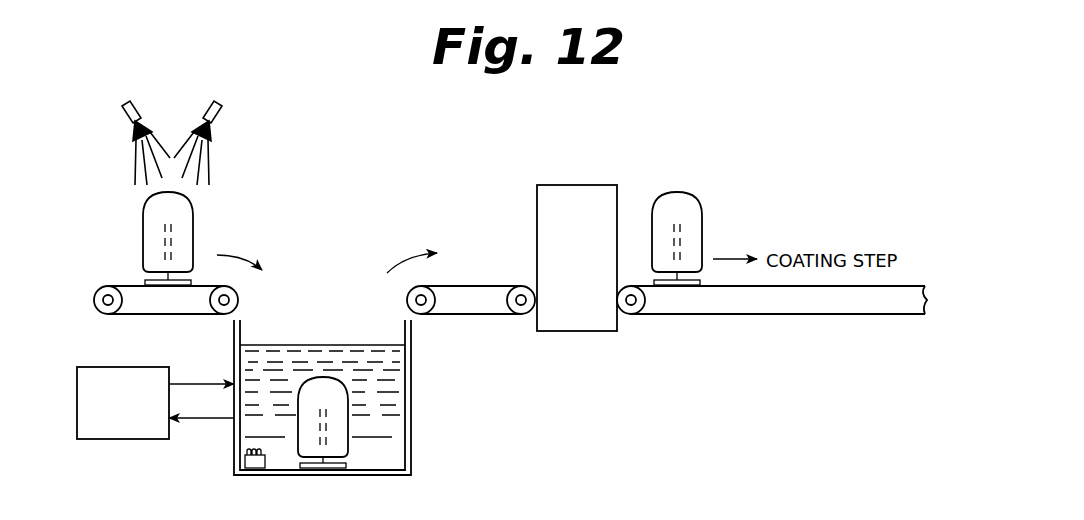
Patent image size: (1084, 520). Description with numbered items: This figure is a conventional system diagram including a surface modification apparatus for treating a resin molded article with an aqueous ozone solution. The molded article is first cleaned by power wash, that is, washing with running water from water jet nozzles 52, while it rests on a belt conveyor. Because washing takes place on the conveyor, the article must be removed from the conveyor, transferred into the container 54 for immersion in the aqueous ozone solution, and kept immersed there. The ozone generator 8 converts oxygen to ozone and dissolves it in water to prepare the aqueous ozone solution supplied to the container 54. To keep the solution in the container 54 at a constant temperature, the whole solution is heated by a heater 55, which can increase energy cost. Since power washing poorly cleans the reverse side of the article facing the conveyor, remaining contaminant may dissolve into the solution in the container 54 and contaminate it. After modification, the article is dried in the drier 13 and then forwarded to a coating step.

The ozone generator 8 is at (141, 440).
The drier 13 is at (580, 185).
The water jet nozzles 52 is at (206, 111).
The container 54 is at (411, 430).
The heater 55 is at (245, 460).